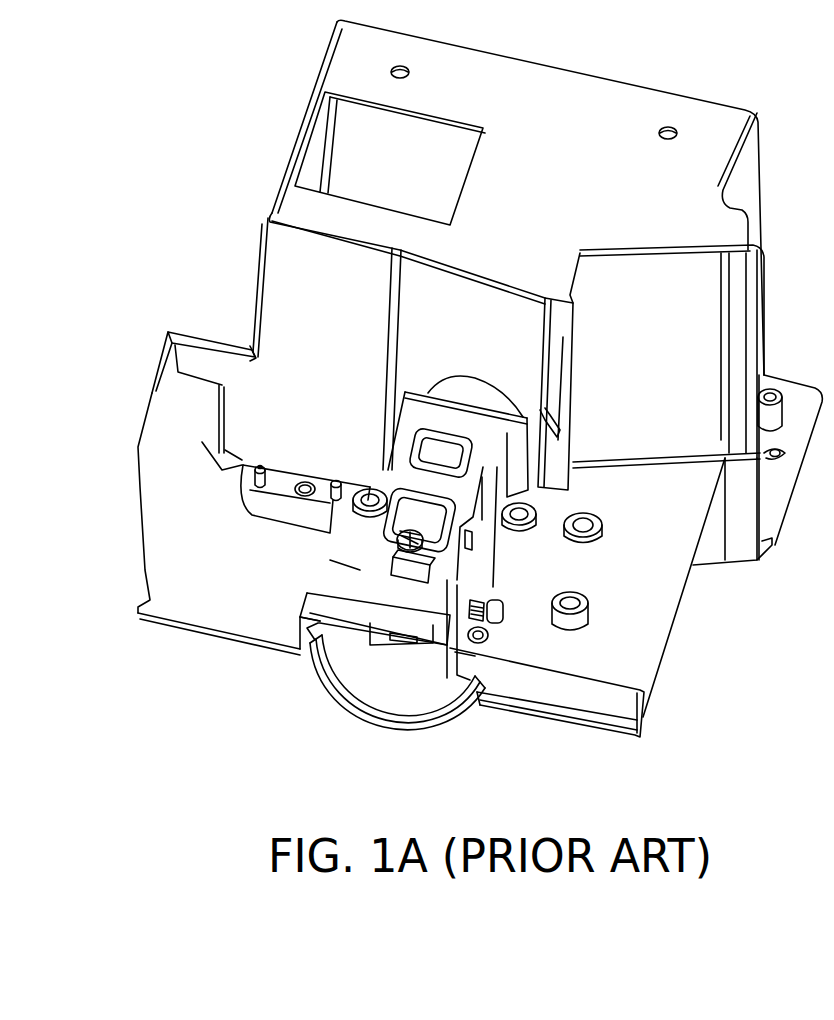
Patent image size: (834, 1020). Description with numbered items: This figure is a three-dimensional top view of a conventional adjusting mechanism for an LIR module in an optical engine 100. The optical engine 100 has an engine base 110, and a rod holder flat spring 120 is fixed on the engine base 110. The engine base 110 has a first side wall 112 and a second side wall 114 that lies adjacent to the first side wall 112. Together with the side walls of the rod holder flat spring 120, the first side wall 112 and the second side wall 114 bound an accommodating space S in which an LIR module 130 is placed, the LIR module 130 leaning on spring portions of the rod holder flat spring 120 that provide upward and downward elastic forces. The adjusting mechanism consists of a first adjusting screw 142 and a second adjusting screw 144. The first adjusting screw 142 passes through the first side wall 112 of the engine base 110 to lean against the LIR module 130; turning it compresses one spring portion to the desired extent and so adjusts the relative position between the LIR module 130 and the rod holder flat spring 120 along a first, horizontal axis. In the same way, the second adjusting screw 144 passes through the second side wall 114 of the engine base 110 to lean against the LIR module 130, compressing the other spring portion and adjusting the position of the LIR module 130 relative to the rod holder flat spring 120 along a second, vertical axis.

The optical engine 100 is at (782, 815).
The engine base 110 is at (333, 552).
The first side wall 112 is at (363, 593).
The second side wall 114 is at (463, 660).
The rod holder flat spring 120 is at (410, 655).
The LIR module 130 is at (353, 655).
The first adjusting screw 142 is at (397, 548).
The second adjusting screw 144 is at (500, 622).
The accommodating space S is at (480, 378).